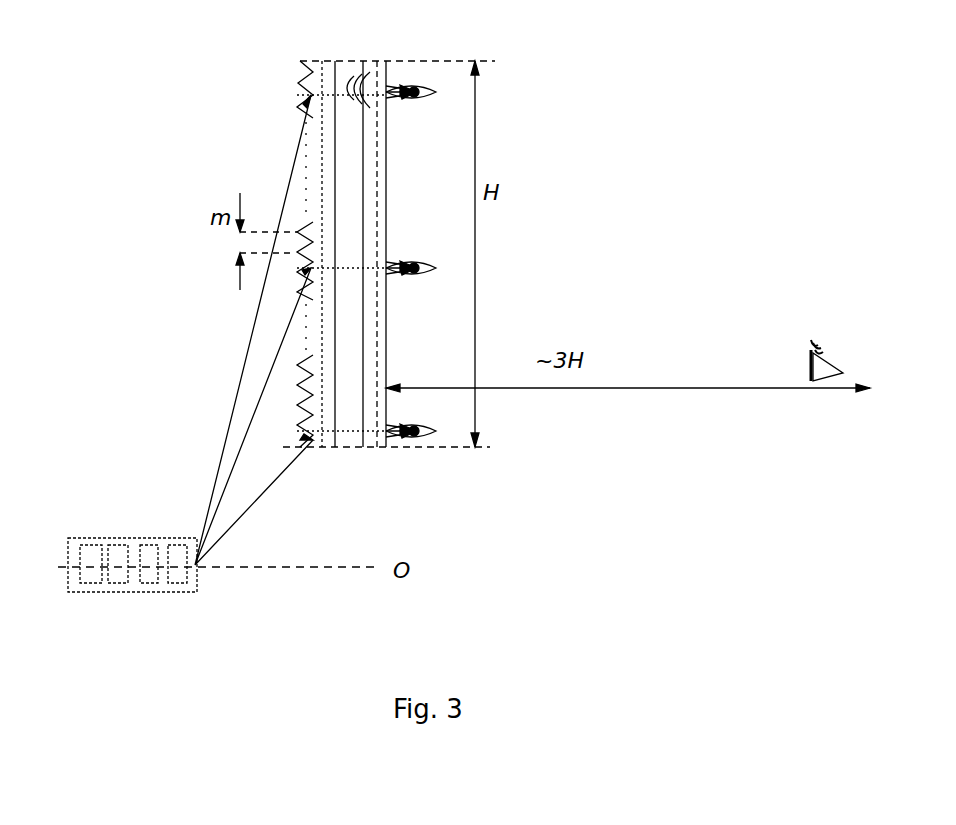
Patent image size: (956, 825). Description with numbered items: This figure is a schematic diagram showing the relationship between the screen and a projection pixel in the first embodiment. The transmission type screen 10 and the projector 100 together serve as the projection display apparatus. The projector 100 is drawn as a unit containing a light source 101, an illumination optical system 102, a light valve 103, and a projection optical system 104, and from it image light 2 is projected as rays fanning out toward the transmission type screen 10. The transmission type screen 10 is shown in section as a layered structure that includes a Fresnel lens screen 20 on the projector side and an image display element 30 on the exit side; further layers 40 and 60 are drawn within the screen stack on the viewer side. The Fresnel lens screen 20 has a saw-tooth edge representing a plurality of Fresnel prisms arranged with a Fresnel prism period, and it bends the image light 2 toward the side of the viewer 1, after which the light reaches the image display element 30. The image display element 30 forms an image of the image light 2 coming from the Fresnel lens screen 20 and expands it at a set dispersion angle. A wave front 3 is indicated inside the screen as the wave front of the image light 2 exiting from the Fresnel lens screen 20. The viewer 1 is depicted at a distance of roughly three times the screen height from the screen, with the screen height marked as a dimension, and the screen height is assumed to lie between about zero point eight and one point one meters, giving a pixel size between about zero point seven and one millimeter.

The viewer 1 is at (840, 358).
The image light 2 is at (234, 393).
The wave front 3 is at (358, 112).
The transmission type screen 10 is at (397, 58).
The Fresnel lens screen 20 is at (344, 455).
The image display element 30 is at (398, 455).
The intermediate layer 40 is at (378, 312).
The outer surface layer 60 is at (384, 363).
The projector 100 is at (134, 586).
The light source 101 is at (84, 550).
The illumination optical system 102 is at (115, 550).
The light valve 103 is at (150, 550).
The projection optical system 104 is at (177, 550).